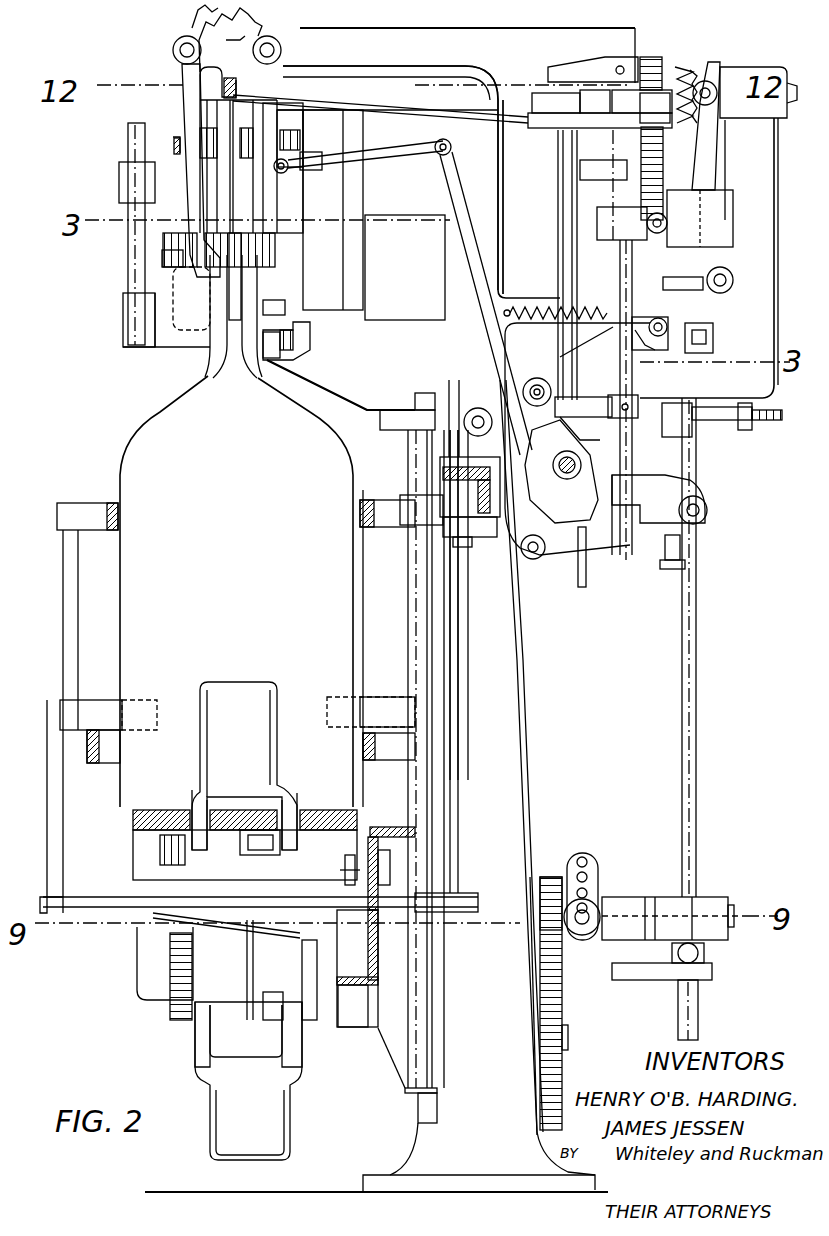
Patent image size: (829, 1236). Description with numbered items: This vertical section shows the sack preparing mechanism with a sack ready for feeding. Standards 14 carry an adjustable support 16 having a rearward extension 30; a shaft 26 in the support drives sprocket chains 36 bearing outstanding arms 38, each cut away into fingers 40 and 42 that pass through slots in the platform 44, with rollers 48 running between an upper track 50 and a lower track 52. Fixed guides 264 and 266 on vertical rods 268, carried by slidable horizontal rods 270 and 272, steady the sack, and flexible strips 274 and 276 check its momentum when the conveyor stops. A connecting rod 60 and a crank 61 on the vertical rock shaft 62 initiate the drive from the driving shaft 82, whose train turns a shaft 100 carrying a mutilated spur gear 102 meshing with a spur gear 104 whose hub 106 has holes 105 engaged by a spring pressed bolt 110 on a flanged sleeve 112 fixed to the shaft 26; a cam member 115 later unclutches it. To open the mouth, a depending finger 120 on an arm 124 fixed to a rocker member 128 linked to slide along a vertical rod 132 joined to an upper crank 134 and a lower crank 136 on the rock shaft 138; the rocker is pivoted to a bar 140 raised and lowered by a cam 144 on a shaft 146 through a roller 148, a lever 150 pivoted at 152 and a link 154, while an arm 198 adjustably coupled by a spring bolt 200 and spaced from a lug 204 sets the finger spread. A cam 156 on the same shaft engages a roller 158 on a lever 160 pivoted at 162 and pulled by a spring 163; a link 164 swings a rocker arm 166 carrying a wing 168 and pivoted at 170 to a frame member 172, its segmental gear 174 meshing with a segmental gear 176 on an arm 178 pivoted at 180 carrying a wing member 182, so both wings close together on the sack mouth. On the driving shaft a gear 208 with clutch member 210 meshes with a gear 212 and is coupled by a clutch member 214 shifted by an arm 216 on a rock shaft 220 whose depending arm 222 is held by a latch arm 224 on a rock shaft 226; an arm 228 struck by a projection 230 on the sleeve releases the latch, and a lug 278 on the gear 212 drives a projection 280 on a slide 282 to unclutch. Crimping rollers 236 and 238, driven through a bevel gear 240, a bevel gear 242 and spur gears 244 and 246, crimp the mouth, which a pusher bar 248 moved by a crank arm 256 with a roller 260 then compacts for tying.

The standards 14 is at (413, 590).
The support 16 is at (398, 1035).
The shaft 26 is at (736, 912).
The rearward extension 30 is at (387, 820).
The sprocket chains 36 is at (170, 972).
The outstanding arms 38 is at (262, 702).
The finger 40 is at (195, 800).
The finger 42 is at (300, 806).
The platform 44 is at (140, 826).
The rollers 48 is at (263, 1012).
The upper track 50 is at (263, 812).
The lower track 52 is at (262, 858).
The connecting rod 60 is at (356, 872).
The crank 61 is at (392, 870).
The vertical rock shaft 62 is at (452, 686).
The driving shaft 82 is at (793, 67).
The shaft 100 is at (568, 1040).
The mutilated spur gear 102 is at (562, 1066).
The spur gear 104 is at (549, 877).
The holes 105 is at (590, 872).
The extended hub 106 is at (598, 882).
The spring pressed bolt 110 is at (582, 936).
The flanged sleeve 112 is at (640, 946).
The cam member 115 is at (398, 248).
The depending finger 120 is at (228, 185).
The arm 124 is at (469, 107).
The rocker member 128 is at (540, 125).
The vertical rod 132 is at (560, 198).
The upper crank 134 is at (567, 68).
The lower crank 136 is at (588, 405).
The rock shaft 138 is at (620, 258).
The bar 140 is at (610, 215).
The cam 144 is at (592, 428).
The shaft 146 is at (583, 505).
The roller 148 is at (537, 378).
The lever 150 is at (643, 323).
The pivot 152 is at (445, 440).
The link 154 is at (720, 247).
The cam 156 is at (560, 482).
The roller 158 is at (561, 471).
The lever 160 is at (465, 345).
The pivot 162 is at (530, 560).
The spring 163 is at (521, 306).
The link 164 is at (396, 162).
The rocker arm 166 is at (270, 202).
The wing 168 is at (285, 310).
The pivot 170 is at (275, 42).
The frame member 172 is at (358, 42).
The segmental gear 174 is at (256, 32).
The segmental gear 176 is at (190, 17).
The arm 178 is at (190, 100).
The pivot 180 is at (173, 49).
The wing member 182 is at (227, 330).
The arm 198 is at (700, 524).
The spring bolt 200 is at (690, 566).
The lug 204 is at (712, 500).
The gear 208 is at (652, 57).
The clutch member 210 is at (678, 66).
The gear 212 is at (664, 172).
The clutch member 214 is at (692, 65).
The shifting arm 216 is at (703, 145).
The rock shaft 220 is at (734, 280).
The depending arm 222 is at (748, 432).
The latch arm 224 is at (778, 422).
The rock shaft 226 is at (699, 668).
The arm 228 is at (640, 982).
The projection 230 is at (620, 908).
The crimping roller 236 is at (288, 247).
The crimping roller 238 is at (180, 253).
The bevel gear 240 is at (197, 73).
The bevel gear 242 is at (175, 128).
The spur gear 244 is at (173, 147).
The spur gear 246 is at (295, 142).
The pusher bar 248 is at (277, 345).
The operating crank arm 256 is at (341, 345).
The roller 260 is at (378, 272).
The fixed guide 264 is at (366, 530).
The fixed guide 266 is at (112, 500).
The vertical rods 268 is at (68, 604).
The slidable horizontal rod 270 is at (405, 920).
The slidable horizontal rod 272 is at (108, 910).
The flexible strip 274 is at (376, 700).
The flexible strip 276 is at (98, 700).
The lug 278 is at (682, 280).
The projection 280 is at (705, 300).
The slide 282 is at (702, 352).